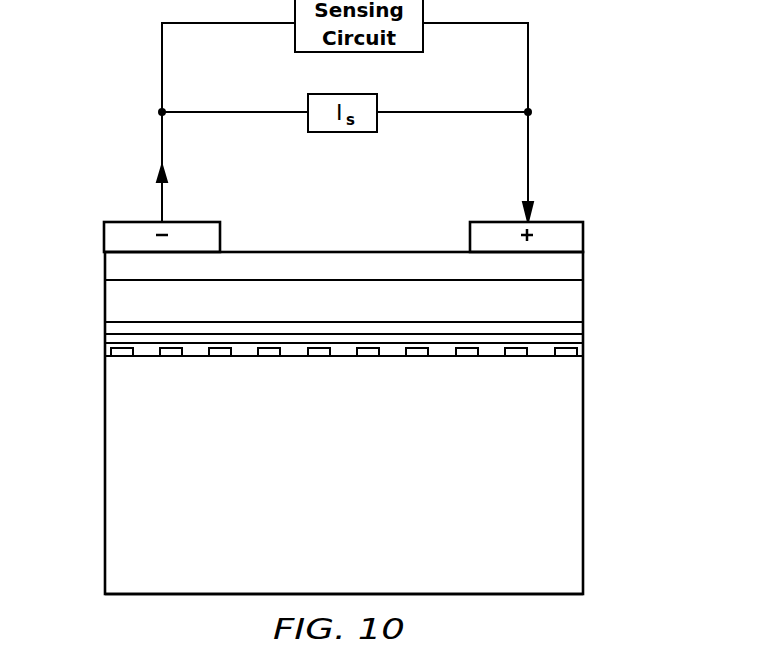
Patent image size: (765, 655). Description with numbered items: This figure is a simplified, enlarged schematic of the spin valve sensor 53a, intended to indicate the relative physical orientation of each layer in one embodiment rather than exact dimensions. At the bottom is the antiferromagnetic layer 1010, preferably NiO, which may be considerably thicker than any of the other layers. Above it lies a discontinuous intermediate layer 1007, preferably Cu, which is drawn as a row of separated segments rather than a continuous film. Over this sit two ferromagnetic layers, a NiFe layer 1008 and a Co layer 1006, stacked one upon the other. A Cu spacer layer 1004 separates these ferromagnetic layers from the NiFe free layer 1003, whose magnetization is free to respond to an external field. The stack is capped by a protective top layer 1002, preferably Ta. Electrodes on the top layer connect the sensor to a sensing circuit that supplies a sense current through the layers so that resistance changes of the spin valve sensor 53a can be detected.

The spin valve sensor 53a is at (623, 113).
The protective top layer 1002 is at (568, 265).
The free layer 1003 is at (573, 297).
The spacer layer 1004 is at (575, 330).
The ferromagnetic layer 1006 is at (583, 340).
The discontinuous intermediate layer 1007 is at (128, 358).
The ferromagnetic layer 1008 is at (583, 351).
The antiferromagnetic layer 1010 is at (583, 453).